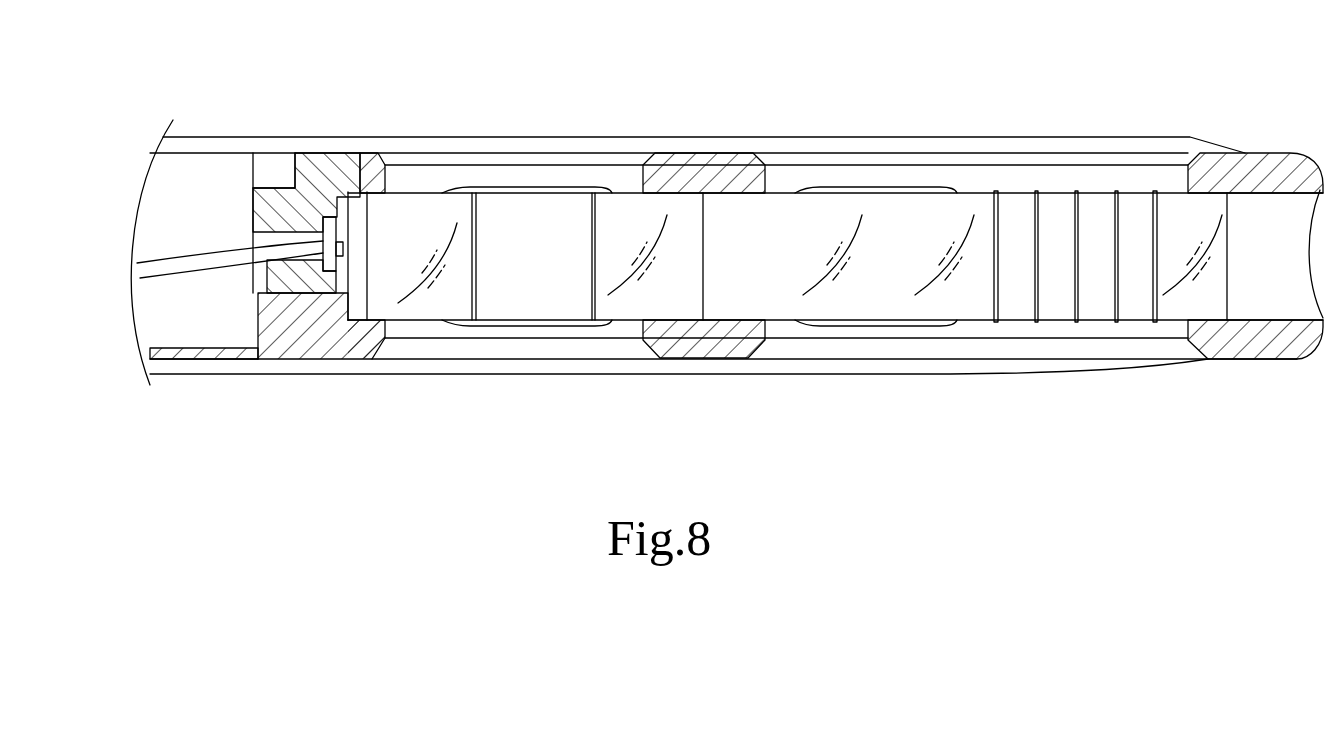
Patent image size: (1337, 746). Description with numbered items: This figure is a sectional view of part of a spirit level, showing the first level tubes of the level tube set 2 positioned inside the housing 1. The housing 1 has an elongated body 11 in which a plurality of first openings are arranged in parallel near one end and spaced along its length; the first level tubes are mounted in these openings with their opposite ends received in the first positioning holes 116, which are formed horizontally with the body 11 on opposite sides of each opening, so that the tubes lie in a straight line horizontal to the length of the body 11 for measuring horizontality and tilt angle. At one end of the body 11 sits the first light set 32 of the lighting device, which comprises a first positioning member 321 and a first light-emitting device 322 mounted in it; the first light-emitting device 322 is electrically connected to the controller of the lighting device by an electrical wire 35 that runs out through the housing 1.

The housing 1 is at (852, 128).
The body 11 is at (1082, 145).
The first positioning holes 116 is at (365, 320).
The level tube set 2 is at (1137, 193).
The first light set 32 is at (272, 187).
The first positioning member 321 is at (290, 280).
The first light-emitting device 322 is at (341, 247).
The electrical wire 35 is at (202, 252).